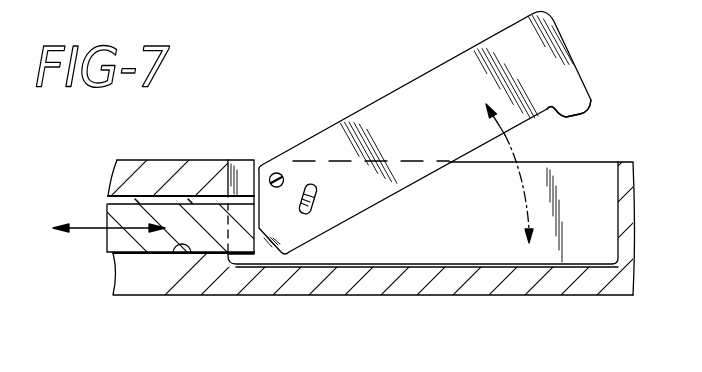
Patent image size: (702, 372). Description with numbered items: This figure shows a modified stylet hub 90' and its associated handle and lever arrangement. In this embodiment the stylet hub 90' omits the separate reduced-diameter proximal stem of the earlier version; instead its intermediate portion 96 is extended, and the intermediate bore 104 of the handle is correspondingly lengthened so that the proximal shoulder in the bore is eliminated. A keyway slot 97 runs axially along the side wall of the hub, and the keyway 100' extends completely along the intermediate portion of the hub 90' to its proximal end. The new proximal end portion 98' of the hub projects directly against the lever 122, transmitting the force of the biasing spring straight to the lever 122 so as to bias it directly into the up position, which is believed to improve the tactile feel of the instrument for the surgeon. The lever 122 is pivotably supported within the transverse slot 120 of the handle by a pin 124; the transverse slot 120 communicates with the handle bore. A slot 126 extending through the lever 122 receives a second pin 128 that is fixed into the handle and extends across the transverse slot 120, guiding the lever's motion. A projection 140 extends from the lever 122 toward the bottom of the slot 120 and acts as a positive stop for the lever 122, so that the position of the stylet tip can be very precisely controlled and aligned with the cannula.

The stylet hub 90' is at (148, 235).
The intermediate portion 96 is at (143, 247).
The keyway slot 97 is at (154, 196).
The proximal end portion 98' is at (195, 177).
The keyway 100' is at (135, 185).
The intermediate bore 104 is at (190, 258).
The transverse slot 120 is at (484, 246).
The lever 122 is at (436, 76).
The pin 124 is at (271, 175).
The slot 126 is at (317, 190).
The pin 128 is at (309, 211).
The projection 140 is at (584, 113).